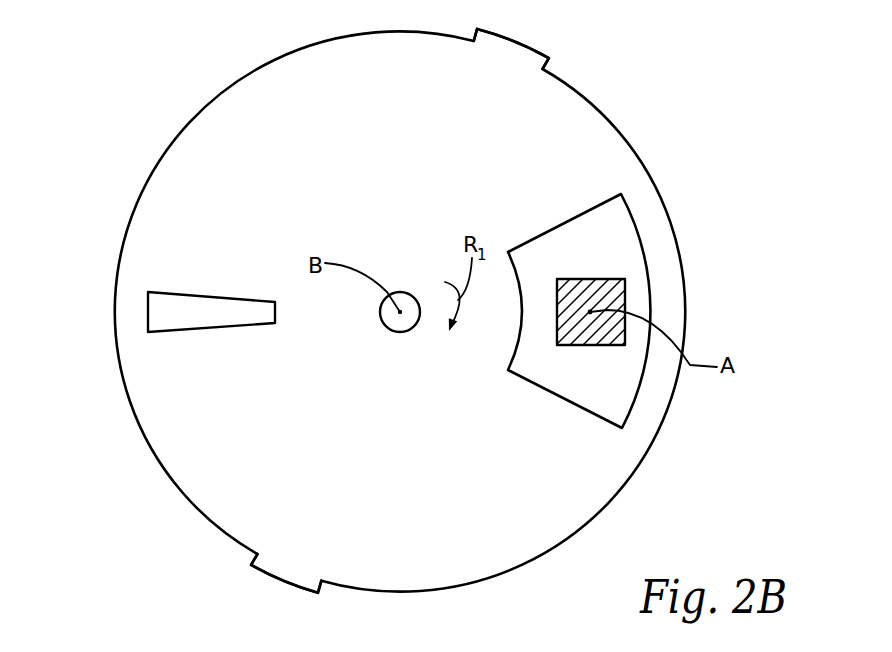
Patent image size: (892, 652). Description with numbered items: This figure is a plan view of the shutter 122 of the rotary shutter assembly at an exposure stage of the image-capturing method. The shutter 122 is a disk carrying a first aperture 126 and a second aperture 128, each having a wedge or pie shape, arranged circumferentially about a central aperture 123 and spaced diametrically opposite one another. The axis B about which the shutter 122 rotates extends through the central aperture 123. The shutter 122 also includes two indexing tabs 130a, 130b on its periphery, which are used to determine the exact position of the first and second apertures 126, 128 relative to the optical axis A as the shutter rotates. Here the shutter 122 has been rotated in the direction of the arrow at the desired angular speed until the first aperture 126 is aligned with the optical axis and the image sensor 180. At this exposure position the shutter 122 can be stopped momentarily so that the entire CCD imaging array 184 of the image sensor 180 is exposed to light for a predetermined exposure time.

The shutter 122 is at (248, 72).
The central aperture 123 is at (380, 327).
The first aperture 126 is at (632, 215).
The second aperture 128 is at (147, 313).
The tab 130a is at (520, 43).
The tab 130b is at (280, 583).
The image sensor 180 is at (627, 297).
The CCD imaging array 184 is at (605, 328).